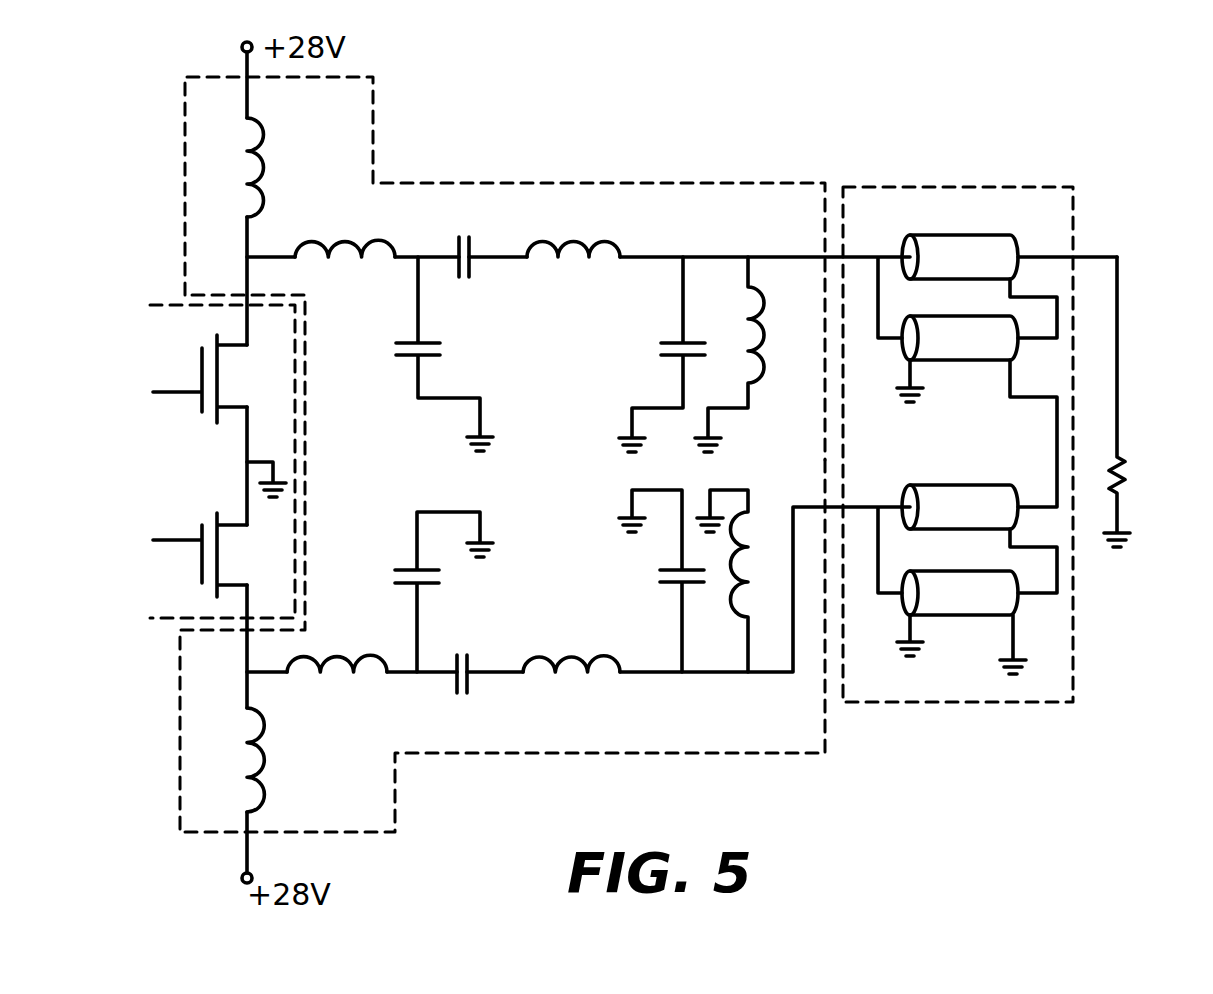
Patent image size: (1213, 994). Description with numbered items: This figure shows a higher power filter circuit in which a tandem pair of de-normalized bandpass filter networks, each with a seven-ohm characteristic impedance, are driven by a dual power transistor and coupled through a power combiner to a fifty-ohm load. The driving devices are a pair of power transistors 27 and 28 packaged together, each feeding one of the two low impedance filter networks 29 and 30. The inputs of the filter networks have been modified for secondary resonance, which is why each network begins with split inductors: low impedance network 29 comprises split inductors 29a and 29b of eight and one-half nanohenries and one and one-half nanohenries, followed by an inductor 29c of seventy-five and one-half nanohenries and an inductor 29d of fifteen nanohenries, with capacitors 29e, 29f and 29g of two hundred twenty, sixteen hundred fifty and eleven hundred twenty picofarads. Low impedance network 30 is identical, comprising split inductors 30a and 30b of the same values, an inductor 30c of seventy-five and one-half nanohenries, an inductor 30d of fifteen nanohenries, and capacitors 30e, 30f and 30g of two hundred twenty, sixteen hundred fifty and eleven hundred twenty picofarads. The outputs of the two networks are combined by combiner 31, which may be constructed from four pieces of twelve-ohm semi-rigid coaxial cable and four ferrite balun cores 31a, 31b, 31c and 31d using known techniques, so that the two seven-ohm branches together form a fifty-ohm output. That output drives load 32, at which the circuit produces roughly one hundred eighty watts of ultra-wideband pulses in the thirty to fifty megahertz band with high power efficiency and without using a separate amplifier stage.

The power transistor 27 is at (222, 379).
The power transistor 28 is at (222, 560).
The low impedance filter network 29 is at (490, 183).
The split inductor 29a is at (262, 163).
The split inductor 29b is at (355, 238).
The inductor 29c is at (605, 238).
The inductor 29d is at (767, 363).
The capacitor 29e is at (472, 268).
The capacitor 29f is at (405, 340).
The capacitor 29g is at (665, 360).
The low impedance filter network 30 is at (530, 753).
The split inductor 30a is at (262, 765).
The split inductor 30b is at (345, 652).
The inductor 30c is at (575, 660).
The inductor 30d is at (760, 522).
The capacitor 30e is at (450, 650).
The capacitor 30f is at (405, 565).
The capacitor 30g is at (672, 590).
The combiner 31 is at (985, 188).
The ferrite balun core 31a is at (970, 235).
The ferrite balun core 31b is at (980, 360).
The ferrite balun core 31c is at (940, 487).
The ferrite balun core 31d is at (978, 612).
The load 32 is at (1125, 470).